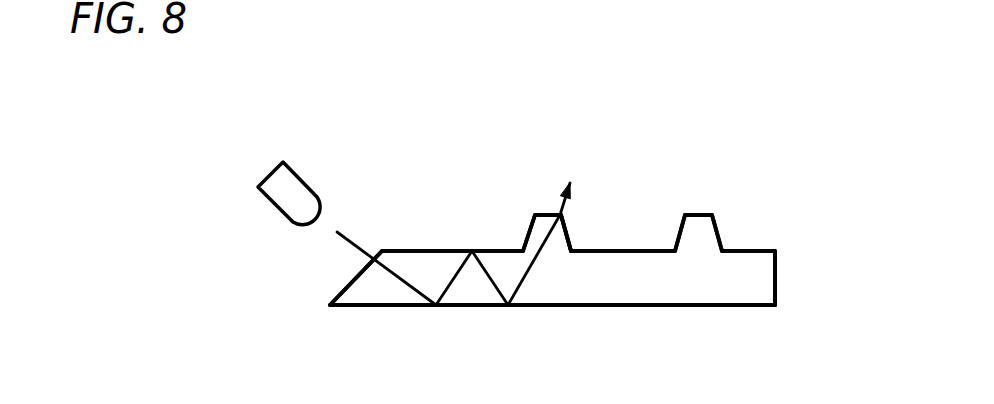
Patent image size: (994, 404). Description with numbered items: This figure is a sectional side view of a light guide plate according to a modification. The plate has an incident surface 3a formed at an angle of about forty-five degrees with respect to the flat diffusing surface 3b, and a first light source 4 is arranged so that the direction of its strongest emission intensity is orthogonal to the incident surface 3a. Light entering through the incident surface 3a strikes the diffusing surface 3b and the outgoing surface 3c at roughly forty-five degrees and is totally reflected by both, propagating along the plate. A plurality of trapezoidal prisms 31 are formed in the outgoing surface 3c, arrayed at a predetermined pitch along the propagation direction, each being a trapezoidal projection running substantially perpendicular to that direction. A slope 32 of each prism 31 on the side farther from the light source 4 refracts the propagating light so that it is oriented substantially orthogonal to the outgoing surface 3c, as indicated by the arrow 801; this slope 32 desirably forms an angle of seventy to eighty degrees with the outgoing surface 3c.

The first light source 4 is at (268, 201).
The arrow 801 is at (495, 288).
The incident surface 3a is at (346, 284).
The diffusing surface 3b is at (747, 307).
The outgoing surface 3c is at (767, 250).
The trapezoidal prism 31 is at (700, 213).
The slope 32 is at (565, 240).